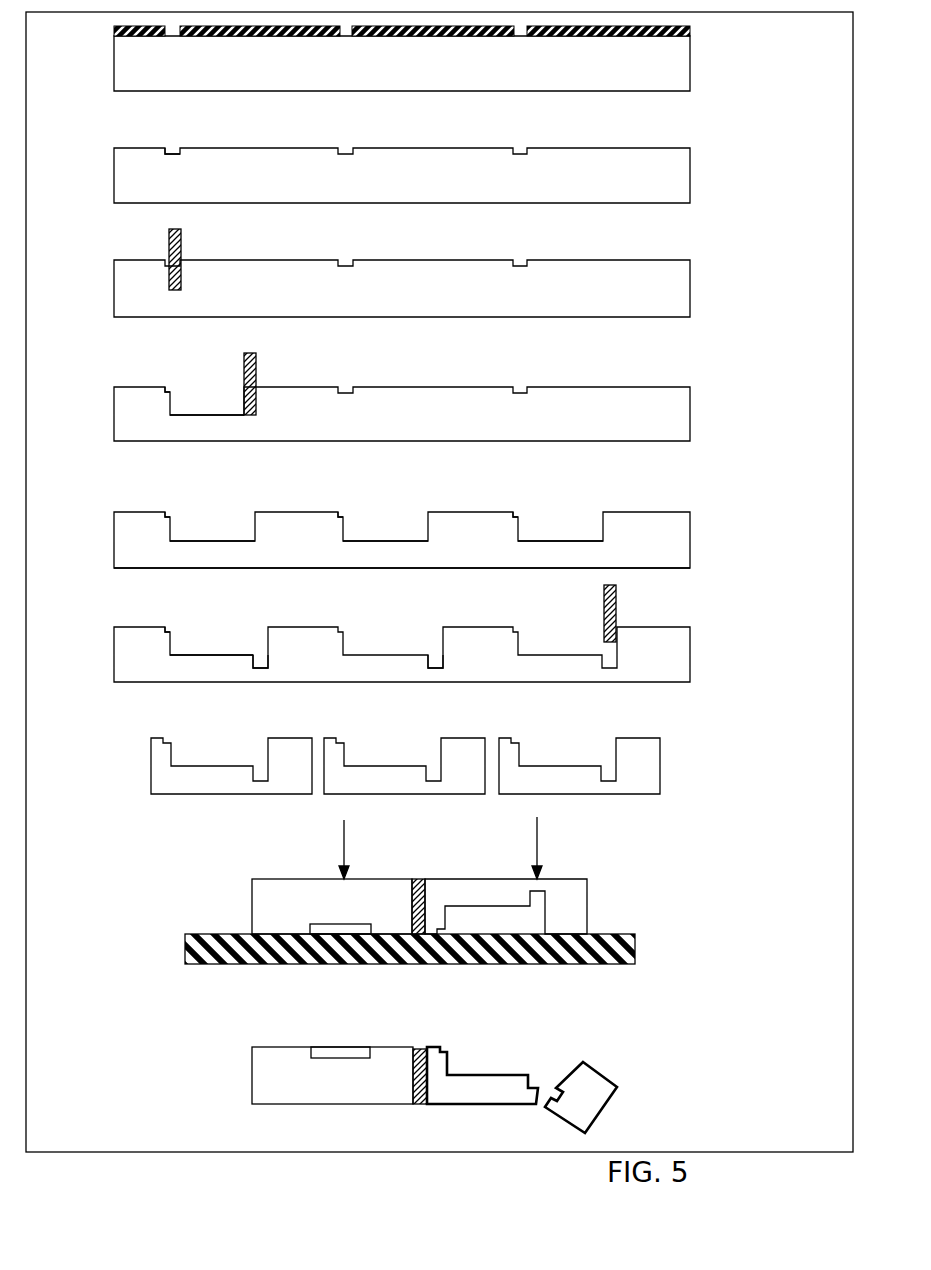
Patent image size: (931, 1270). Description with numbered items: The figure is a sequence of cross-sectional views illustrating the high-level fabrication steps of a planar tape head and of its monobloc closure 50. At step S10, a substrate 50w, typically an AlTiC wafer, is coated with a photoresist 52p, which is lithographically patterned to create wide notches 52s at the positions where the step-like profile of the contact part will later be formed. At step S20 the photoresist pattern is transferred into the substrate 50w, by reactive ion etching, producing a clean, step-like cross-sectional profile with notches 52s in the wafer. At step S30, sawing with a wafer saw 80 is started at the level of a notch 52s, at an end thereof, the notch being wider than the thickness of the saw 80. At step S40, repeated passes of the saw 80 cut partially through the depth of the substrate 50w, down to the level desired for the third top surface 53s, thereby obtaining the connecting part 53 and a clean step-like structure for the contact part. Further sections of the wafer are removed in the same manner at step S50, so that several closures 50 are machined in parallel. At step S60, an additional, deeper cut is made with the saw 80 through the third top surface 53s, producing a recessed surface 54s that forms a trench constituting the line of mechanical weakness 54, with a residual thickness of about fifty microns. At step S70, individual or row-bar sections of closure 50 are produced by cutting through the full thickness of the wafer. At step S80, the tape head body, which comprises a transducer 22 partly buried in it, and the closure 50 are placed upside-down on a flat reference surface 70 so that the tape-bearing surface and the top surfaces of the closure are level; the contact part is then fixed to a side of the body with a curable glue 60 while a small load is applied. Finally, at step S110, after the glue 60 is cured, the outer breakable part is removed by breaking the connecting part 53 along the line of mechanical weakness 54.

The photoresist 52p is at (114, 32).
The substrate 50w is at (577, 76).
The notches 52s is at (344, 146).
The third top surface 53s is at (203, 413).
The connecting part 53 is at (550, 560).
The recessed surface 54s is at (433, 653).
The line of mechanical weakness 54 is at (262, 684).
The wafer saw 80 is at (167, 236).
The closure 50 is at (184, 788).
The curable glue 60 is at (417, 877).
The transducer 22 is at (338, 924).
The reference surface 70 is at (185, 958).
The coating and patterning step S10 is at (429, 83).
The pattern transfer step S20 is at (716, 168).
The sawing start step S30 is at (715, 288).
The partial cutting step S40 is at (708, 422).
The section removal step S50 is at (712, 528).
The weakening cut step S60 is at (712, 652).
The singulation step S70 is at (681, 788).
The arranging step S80 is at (660, 932).
The breakable part removal step S110 is at (640, 1063).